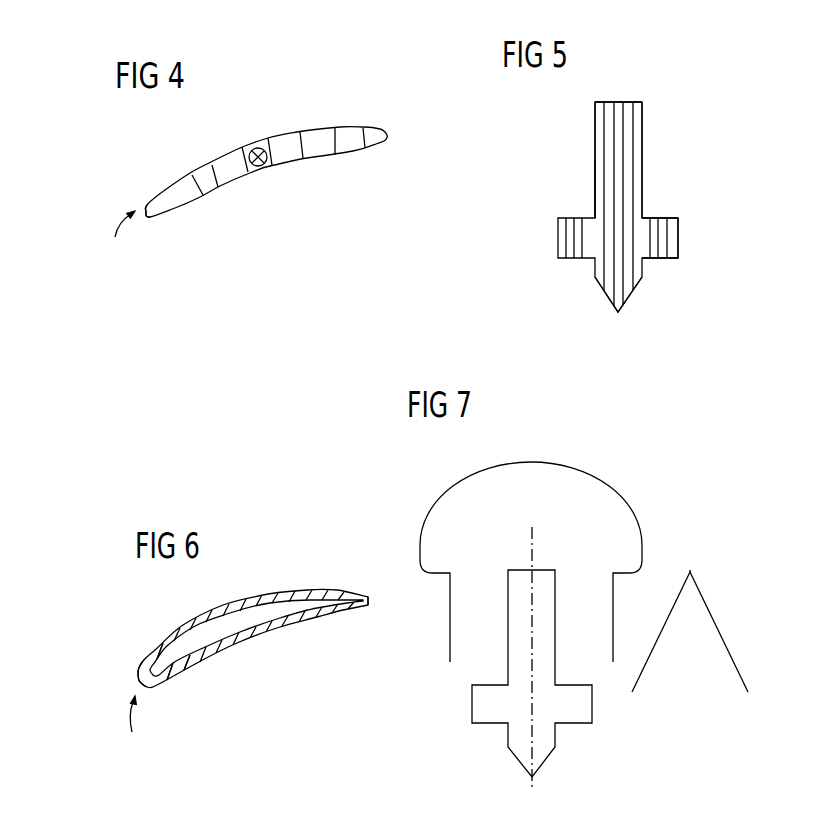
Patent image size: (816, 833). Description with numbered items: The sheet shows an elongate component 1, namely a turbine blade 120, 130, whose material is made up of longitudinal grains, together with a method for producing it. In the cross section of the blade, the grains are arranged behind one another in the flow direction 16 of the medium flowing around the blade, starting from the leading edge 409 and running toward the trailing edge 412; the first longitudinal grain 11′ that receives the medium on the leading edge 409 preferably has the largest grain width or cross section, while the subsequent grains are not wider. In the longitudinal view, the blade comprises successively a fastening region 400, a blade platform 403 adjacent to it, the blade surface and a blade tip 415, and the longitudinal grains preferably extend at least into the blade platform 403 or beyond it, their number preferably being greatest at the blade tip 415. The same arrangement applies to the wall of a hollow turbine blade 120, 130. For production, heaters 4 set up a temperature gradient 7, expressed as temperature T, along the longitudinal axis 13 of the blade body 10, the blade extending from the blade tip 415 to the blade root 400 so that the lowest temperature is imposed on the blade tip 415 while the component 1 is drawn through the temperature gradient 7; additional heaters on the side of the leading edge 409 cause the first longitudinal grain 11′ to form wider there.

In FIG. 4, the elongate component 1 is at (292, 172).
In FIG. 6, the elongate component 1 is at (266, 641).
In FIG. 7, the elongate component 1 is at (583, 676).
In FIG. 4, the turbine blade 120 is at (266, 172).
In FIG. 5, the turbine blade 120 is at (586, 227).
In FIG. 6, the turbine blade 120 is at (253, 638).
In FIG. 7, the turbine blade 120 is at (532, 673).
In FIG. 4, the turbine vane 130 is at (322, 178).
In FIG. 5, the turbine vane 130 is at (596, 313).
In FIG. 6, the turbine vane 130 is at (278, 660).
In FIG. 7, the turbine vane 130 is at (532, 673).
In FIG. 7, the heaters 4 is at (632, 510).
In FIG. 7, the temperature gradient 7 is at (717, 620).
In FIG. 7, the temperature T is at (691, 556).
In FIG. 7, the blade body 10 is at (543, 602).
In FIG. 4, the longitudinal axis 13 is at (253, 143).
In FIG. 7, the longitudinal axis 13 is at (534, 545).
In FIG. 4, the flow direction 16 is at (121, 242).
In FIG. 6, the flow direction 16 is at (138, 730).
In FIG. 4, the first longitudinal grain 11′ is at (175, 193).
In FIG. 5, the first longitudinal grain 11′ is at (598, 181).
In FIG. 6, the first longitudinal grain 11′ is at (162, 684).
In FIG. 5, the fastening region 400 is at (621, 300).
In FIG. 5, the blade platform 403 is at (678, 240).
In FIG. 4, the leading edge 409 is at (145, 217).
In FIG. 5, the leading edge 409 is at (595, 147).
In FIG. 6, the leading edge 409 is at (138, 683).
In FIG. 4, the trailing edge 412 is at (385, 138).
In FIG. 5, the trailing edge 412 is at (642, 172).
In FIG. 6, the trailing edge 412 is at (368, 596).
In FIG. 5, the blade tip 415 is at (618, 102).